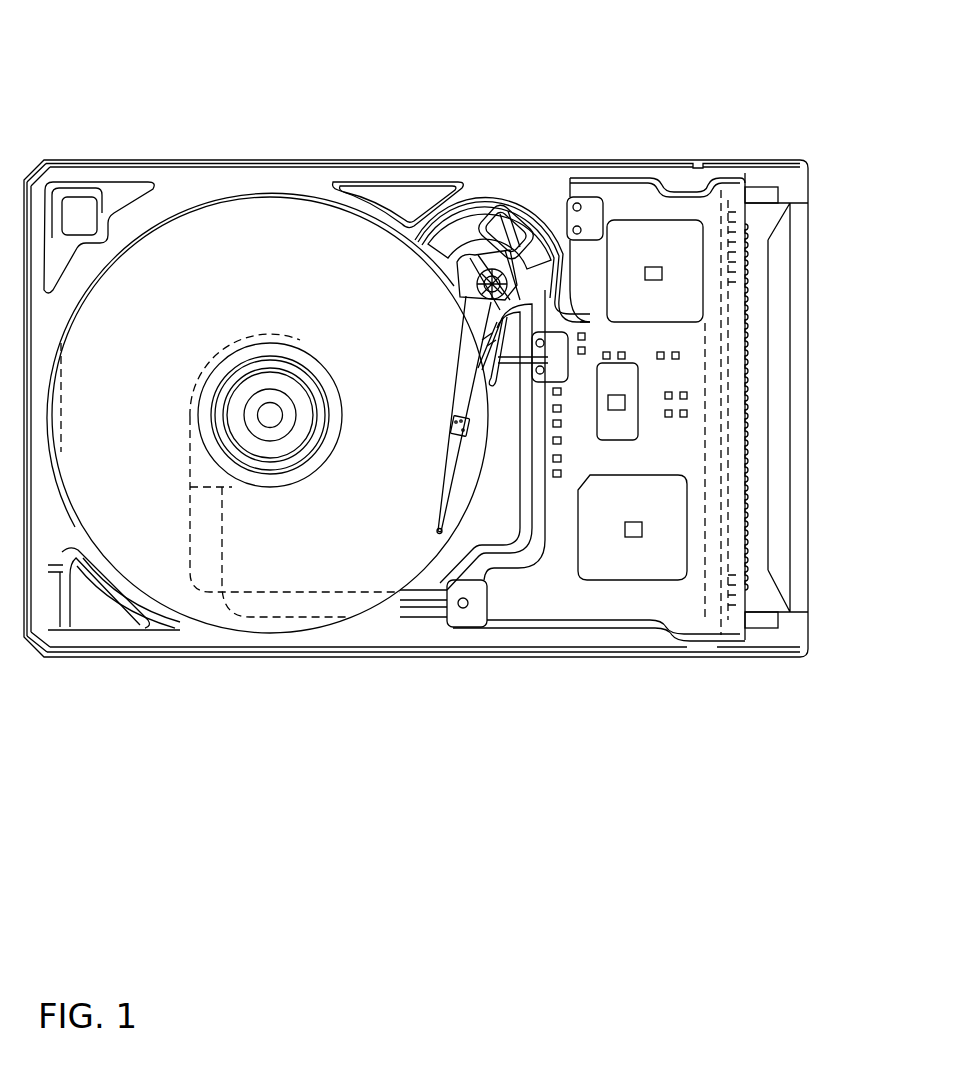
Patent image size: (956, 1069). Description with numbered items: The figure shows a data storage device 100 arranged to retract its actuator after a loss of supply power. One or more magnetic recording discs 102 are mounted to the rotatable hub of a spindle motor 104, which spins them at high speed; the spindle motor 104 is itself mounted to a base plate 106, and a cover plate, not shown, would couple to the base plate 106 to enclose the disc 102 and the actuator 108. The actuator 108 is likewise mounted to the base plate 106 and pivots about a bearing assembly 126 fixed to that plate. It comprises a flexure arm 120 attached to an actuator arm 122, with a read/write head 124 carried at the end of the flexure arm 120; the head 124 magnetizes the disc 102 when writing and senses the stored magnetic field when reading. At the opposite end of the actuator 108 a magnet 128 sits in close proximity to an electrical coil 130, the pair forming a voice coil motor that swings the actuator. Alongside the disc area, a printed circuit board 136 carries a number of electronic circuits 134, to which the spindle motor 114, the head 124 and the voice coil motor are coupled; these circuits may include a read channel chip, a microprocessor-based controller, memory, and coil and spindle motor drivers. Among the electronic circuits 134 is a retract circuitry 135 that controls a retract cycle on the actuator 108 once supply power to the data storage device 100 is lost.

The data storage device 100 is at (689, 61).
The magnetic recording disc 102 is at (330, 537).
The spindle motor 104 is at (234, 365).
The base plate 106 is at (182, 183).
The actuator 108 is at (439, 348).
The spindle motor 114 is at (270, 414).
The flexure arm 120 is at (447, 453).
The actuator arm 122 is at (452, 396).
The read/write head 124 is at (434, 527).
The bearing assembly 126 is at (438, 292).
The magnet 128 is at (506, 232).
The electrical coil 130 is at (527, 223).
The electronic circuits 134 is at (670, 304).
The retract circuitry 135 is at (650, 497).
The printed circuit board 136 is at (560, 606).